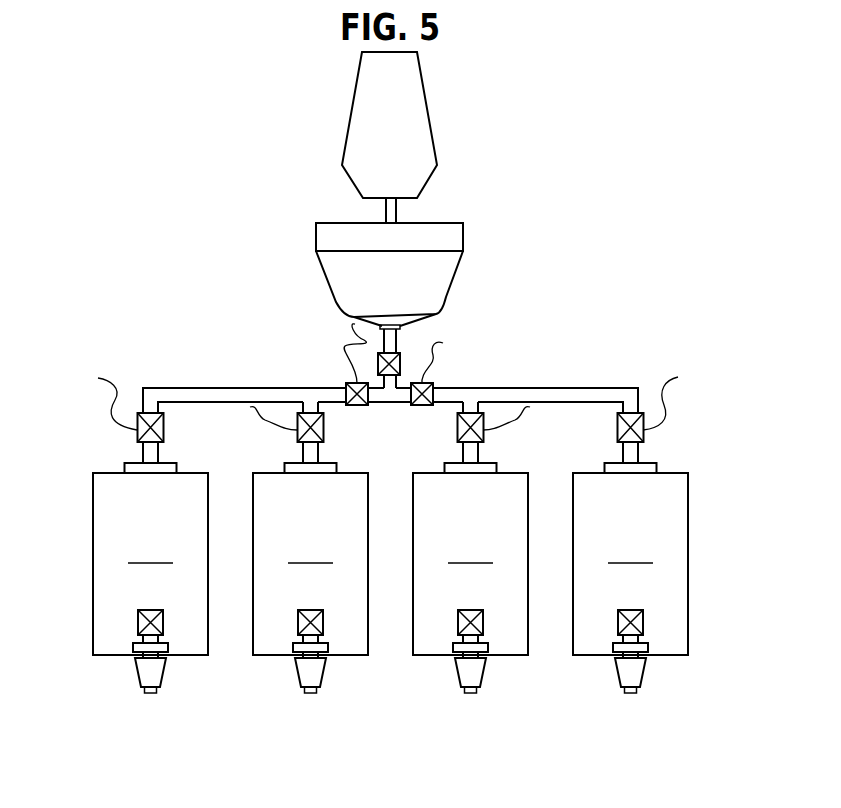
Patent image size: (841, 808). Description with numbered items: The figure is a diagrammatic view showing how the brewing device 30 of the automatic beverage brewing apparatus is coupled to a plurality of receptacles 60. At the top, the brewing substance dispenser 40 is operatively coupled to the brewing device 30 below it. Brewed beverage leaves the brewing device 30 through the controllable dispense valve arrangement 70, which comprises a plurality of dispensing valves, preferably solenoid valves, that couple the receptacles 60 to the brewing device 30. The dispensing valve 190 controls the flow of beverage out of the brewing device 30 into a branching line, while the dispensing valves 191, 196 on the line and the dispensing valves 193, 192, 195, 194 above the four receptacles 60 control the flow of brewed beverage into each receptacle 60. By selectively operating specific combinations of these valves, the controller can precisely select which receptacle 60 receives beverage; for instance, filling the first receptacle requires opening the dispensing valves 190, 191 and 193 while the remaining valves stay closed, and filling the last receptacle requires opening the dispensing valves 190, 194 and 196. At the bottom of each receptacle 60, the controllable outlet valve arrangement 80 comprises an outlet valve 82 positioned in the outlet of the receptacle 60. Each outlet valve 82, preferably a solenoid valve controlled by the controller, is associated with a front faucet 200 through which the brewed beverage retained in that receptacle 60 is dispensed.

The brewing substance dispenser 40 is at (435, 125).
The brewing device 30 is at (450, 237).
The dispensing valve 190 is at (400, 366).
The controllable dispense valve arrangement 70 is at (578, 358).
The dispensing valve 191 is at (351, 405).
The dispensing valve 196 is at (418, 405).
The dispensing valve 193 is at (136, 432).
The dispensing valve 192 is at (296, 433).
The dispensing valve 195 is at (483, 437).
The dispensing valve 194 is at (643, 437).
The receptacle 60 is at (69, 520).
The controllable outlet valve arrangement 80 is at (703, 625).
The outlet valve 82 is at (138, 621).
The front faucet 200 is at (157, 667).